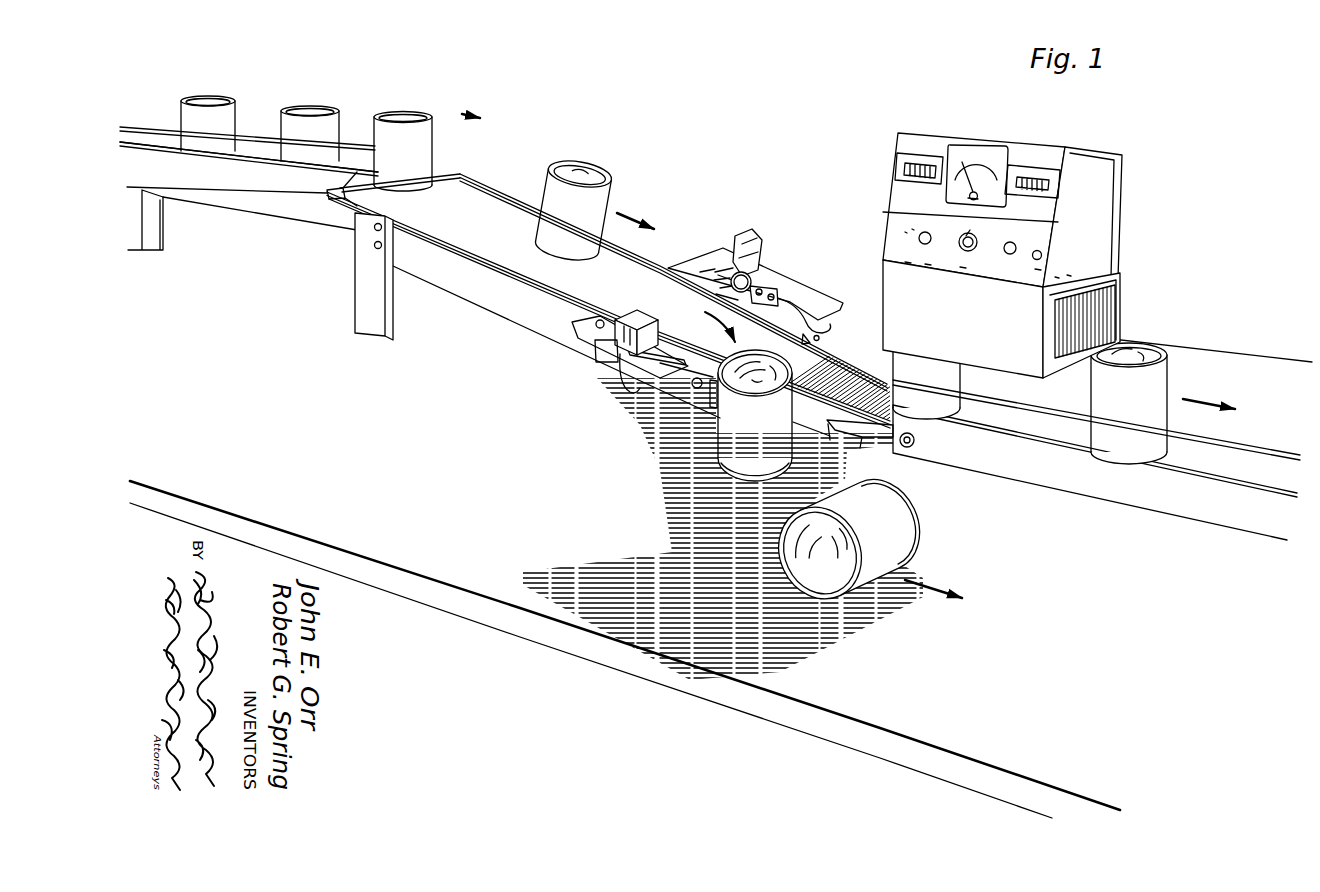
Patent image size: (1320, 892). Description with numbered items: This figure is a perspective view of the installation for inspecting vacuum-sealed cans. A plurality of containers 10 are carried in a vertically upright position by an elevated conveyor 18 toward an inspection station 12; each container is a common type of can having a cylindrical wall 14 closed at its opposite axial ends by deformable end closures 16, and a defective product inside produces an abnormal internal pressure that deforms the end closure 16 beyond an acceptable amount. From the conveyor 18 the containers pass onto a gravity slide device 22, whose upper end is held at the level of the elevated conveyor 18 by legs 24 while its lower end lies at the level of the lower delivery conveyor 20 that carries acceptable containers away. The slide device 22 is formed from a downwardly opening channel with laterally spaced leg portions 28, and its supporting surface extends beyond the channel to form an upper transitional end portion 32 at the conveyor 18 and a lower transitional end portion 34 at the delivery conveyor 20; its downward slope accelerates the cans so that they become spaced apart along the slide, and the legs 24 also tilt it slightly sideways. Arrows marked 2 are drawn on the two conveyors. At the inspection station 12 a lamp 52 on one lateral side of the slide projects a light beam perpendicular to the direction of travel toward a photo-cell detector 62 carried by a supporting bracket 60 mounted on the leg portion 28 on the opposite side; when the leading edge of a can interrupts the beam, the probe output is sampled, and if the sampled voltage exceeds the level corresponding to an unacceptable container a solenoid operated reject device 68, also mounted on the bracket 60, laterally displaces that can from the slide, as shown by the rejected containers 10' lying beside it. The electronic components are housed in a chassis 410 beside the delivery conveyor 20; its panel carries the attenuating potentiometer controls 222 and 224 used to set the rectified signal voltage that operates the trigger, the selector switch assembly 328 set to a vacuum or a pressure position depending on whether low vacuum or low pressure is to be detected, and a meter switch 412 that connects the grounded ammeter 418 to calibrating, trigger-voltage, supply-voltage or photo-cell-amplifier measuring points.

The section indication arrow 2 is at (368, 143).
The containers 10 is at (429, 136).
The rejected containers 10' is at (700, 415).
The inspection station 12 is at (755, 248).
The cylindrical wall 14 is at (569, 186).
The end closures 16 is at (584, 172).
The conveyor 18 is at (205, 200).
The delivery conveyor 20 is at (1058, 472).
The gravity slide device 22 is at (623, 305).
The legs 24 is at (368, 290).
The leg portions 28 is at (465, 265).
The upper transitional end portion 32 is at (338, 196).
The lower transitional end portion 34 is at (858, 433).
The lamp 52 is at (634, 313).
The supporting bracket 60 is at (697, 274).
The photo-cell detector 62 is at (777, 291).
The solenoid operated reject device 68 is at (763, 230).
The attenuating potentiometer control 222 is at (918, 236).
The attenuating potentiometer control 224 is at (1016, 244).
The selector switch assembly 328 is at (964, 247).
The chassis 410 is at (980, 236).
The meter switch 412 is at (1042, 255).
The ammeter 418 is at (980, 165).